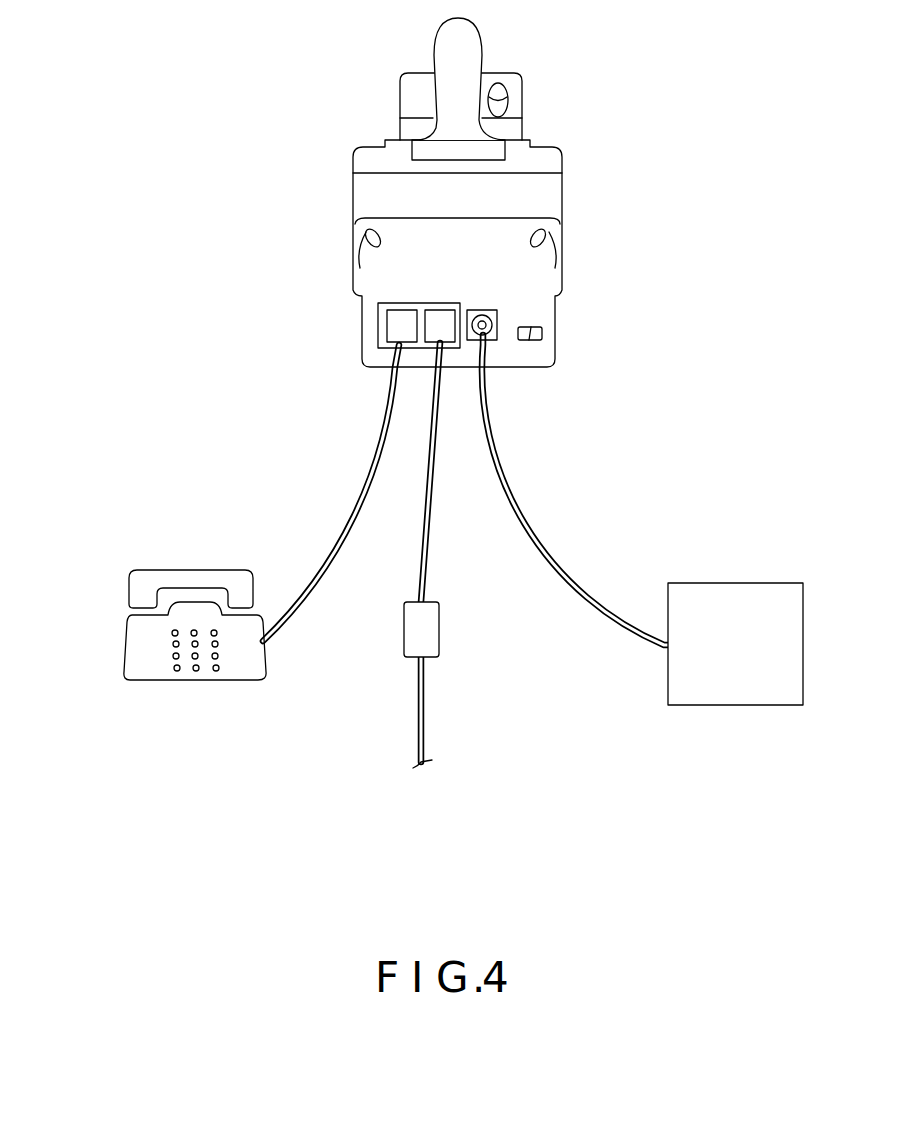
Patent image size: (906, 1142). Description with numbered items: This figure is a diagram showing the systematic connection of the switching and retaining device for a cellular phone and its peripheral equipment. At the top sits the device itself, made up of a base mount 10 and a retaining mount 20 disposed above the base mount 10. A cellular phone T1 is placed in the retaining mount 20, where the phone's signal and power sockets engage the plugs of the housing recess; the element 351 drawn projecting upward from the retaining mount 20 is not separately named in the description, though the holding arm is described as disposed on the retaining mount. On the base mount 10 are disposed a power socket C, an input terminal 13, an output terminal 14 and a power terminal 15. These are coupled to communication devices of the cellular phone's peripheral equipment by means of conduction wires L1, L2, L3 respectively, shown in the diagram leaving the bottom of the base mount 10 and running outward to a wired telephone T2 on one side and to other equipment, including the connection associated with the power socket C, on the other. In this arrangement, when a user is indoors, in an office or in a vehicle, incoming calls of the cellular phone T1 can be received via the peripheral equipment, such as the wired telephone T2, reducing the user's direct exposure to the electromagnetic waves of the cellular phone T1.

The base mount 10 is at (553, 202).
The retaining mount 20 is at (553, 158).
The handle 351 is at (447, 52).
The cellular phone T1 is at (513, 90).
The wired telephone T2 is at (130, 572).
The power socket C is at (803, 645).
The input terminal 13 is at (443, 343).
The output terminal 14 is at (380, 332).
The power terminal 15 is at (497, 333).
The conduction wire L1 is at (427, 727).
The conduction wire L2 is at (340, 536).
The conduction wire L3 is at (552, 556).